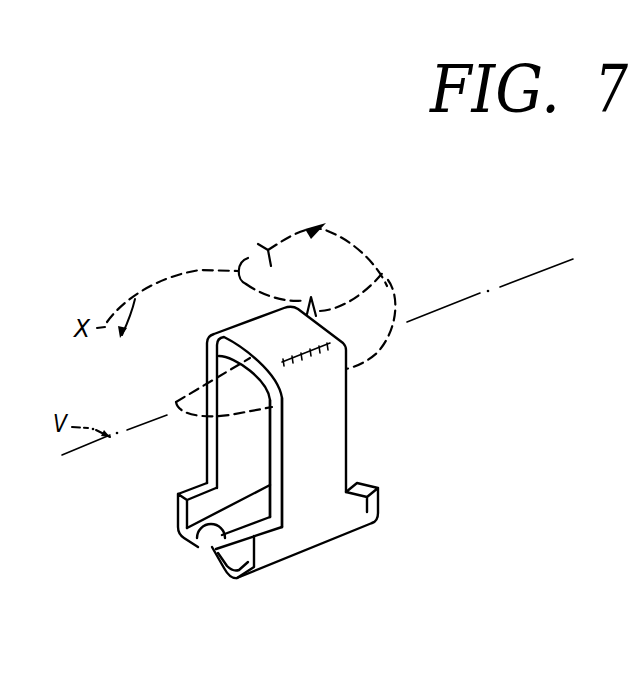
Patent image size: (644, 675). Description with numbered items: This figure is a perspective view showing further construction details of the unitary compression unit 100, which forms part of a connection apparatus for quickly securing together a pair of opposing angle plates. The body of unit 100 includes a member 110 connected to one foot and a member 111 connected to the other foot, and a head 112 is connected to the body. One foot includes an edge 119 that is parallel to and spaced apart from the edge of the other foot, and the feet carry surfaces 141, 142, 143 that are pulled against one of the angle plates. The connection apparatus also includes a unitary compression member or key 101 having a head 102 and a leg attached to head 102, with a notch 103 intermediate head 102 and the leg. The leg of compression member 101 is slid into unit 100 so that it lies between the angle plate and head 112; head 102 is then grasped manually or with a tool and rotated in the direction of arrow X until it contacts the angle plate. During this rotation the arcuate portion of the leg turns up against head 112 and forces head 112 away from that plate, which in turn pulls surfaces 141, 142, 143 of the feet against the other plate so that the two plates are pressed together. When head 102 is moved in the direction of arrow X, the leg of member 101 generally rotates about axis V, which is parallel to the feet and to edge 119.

The unitary compression unit 100 is at (228, 468).
The unitary compression member or key 101 is at (352, 228).
The head 102 is at (262, 250).
The notch 103 is at (379, 278).
The member 110 is at (207, 360).
The member 111 is at (307, 419).
The head 112 is at (172, 296).
The edge 119 is at (199, 540).
The surface 141 is at (198, 490).
The surface 142 is at (290, 550).
The surface 143 is at (356, 484).